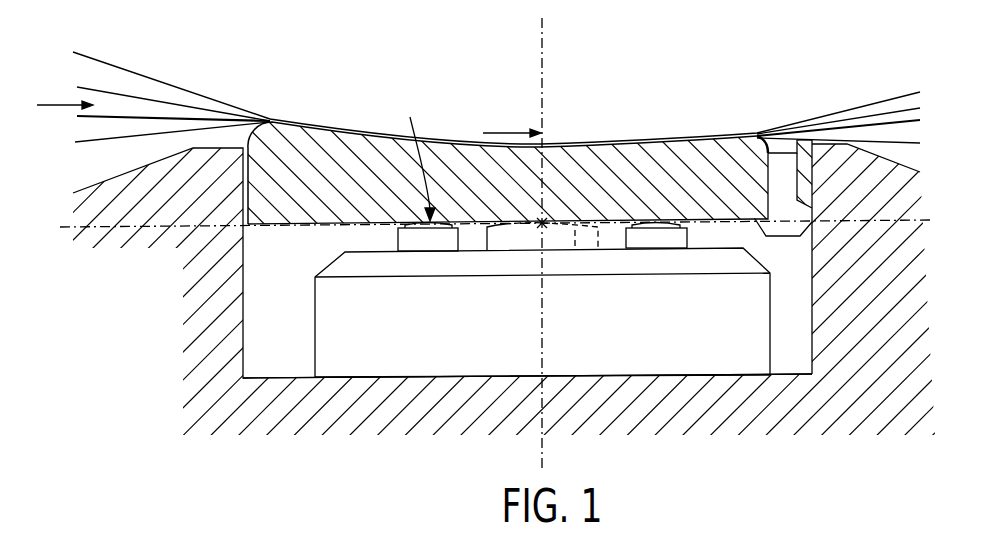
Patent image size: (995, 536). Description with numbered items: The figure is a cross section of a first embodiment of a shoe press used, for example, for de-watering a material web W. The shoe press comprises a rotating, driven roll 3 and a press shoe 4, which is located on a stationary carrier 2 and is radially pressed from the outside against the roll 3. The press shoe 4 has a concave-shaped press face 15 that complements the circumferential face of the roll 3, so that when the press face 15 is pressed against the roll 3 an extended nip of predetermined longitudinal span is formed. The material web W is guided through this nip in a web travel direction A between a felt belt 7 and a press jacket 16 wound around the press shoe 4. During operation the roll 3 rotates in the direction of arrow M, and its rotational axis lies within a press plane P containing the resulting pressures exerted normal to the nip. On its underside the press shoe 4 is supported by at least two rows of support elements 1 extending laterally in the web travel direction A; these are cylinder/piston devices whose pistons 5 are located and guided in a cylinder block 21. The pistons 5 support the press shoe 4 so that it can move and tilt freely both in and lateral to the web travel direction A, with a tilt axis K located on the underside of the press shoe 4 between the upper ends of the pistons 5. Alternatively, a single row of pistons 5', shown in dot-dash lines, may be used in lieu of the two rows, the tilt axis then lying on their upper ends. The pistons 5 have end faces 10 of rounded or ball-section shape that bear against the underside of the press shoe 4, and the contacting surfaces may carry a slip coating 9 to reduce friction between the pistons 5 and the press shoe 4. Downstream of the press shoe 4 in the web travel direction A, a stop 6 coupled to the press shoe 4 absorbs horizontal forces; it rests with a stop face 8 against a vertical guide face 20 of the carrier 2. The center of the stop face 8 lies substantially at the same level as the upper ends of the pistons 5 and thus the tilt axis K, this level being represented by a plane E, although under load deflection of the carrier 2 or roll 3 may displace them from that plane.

The support elements 1 is at (744, 362).
The stationary carrier 2 is at (698, 403).
The roll 3 is at (330, 91).
The press shoe 4 is at (590, 157).
The pistons 5 is at (542, 272).
The pistons 5' is at (575, 270).
The stop 6 is at (782, 165).
The felt belt 7 is at (93, 90).
The stop face 8 is at (812, 220).
The slip coating 9 is at (497, 232).
The end faces 10 is at (418, 157).
The press face 15 is at (640, 140).
The press jacket 16 is at (193, 130).
The vertical guide face 20 is at (814, 312).
The cylinder block 21 is at (393, 358).
The web travel direction A is at (43, 105).
The arrow of roll rotation M is at (498, 132).
The press plane P is at (543, 55).
The plane E is at (150, 228).
The tilt axis K is at (542, 223).
The material web W is at (138, 115).